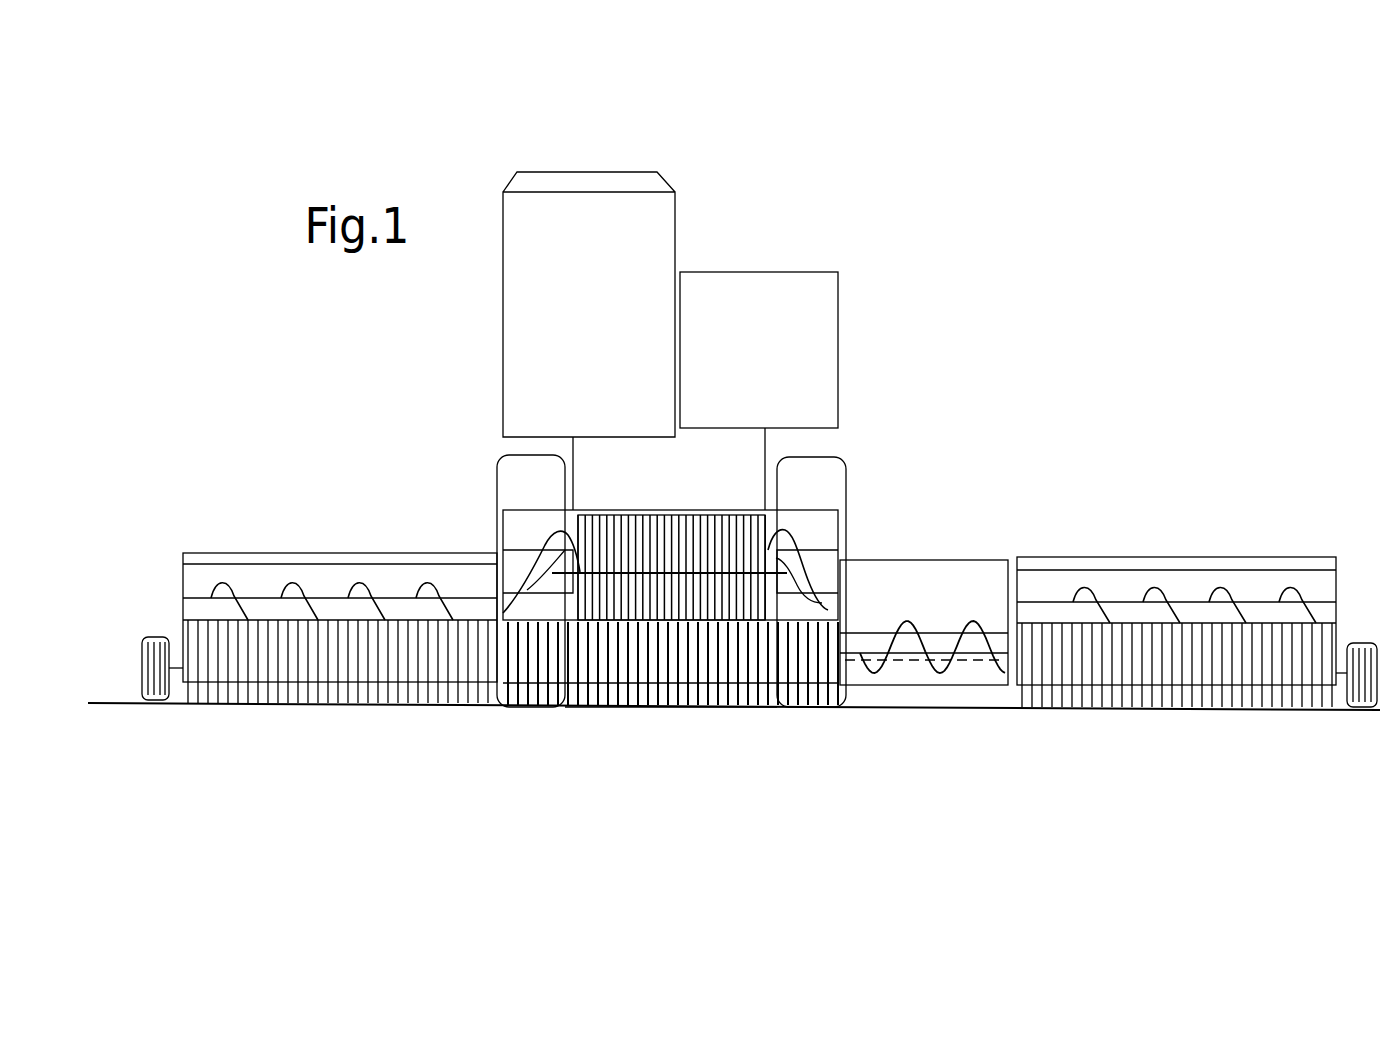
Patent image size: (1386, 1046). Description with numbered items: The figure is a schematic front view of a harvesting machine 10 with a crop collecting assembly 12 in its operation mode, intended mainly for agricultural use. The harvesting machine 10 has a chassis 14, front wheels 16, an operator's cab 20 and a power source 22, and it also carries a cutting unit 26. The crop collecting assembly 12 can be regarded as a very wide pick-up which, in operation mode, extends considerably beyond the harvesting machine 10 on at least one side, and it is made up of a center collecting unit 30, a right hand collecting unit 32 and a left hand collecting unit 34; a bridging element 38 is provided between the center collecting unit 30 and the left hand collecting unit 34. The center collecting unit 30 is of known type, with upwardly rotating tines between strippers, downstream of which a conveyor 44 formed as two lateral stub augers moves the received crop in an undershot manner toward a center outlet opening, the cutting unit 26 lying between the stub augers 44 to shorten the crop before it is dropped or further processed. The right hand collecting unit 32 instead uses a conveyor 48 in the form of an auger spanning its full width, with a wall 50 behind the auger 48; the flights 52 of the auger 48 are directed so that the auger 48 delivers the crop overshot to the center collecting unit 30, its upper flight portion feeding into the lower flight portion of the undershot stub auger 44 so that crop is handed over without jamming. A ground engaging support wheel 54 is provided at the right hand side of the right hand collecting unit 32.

The harvesting machine 10 is at (897, 173).
The crop collecting assembly 12 is at (1084, 494).
The chassis 14 is at (656, 488).
The front wheels 16 is at (828, 487).
The operator's cab 20 is at (576, 348).
The power source 22 is at (743, 348).
The cutting unit 26 is at (723, 543).
The center collecting unit 30 is at (688, 740).
The right hand collecting unit 32 is at (278, 514).
The left hand collecting unit 34 is at (1253, 510).
The bridging element 38 is at (935, 748).
The conveyor (stub augers) 44 is at (822, 557).
The conveyor (auger) 48 is at (200, 595).
The wall 50 is at (384, 553).
The flights 52 is at (296, 591).
The ground engaging support wheel 54 is at (142, 668).